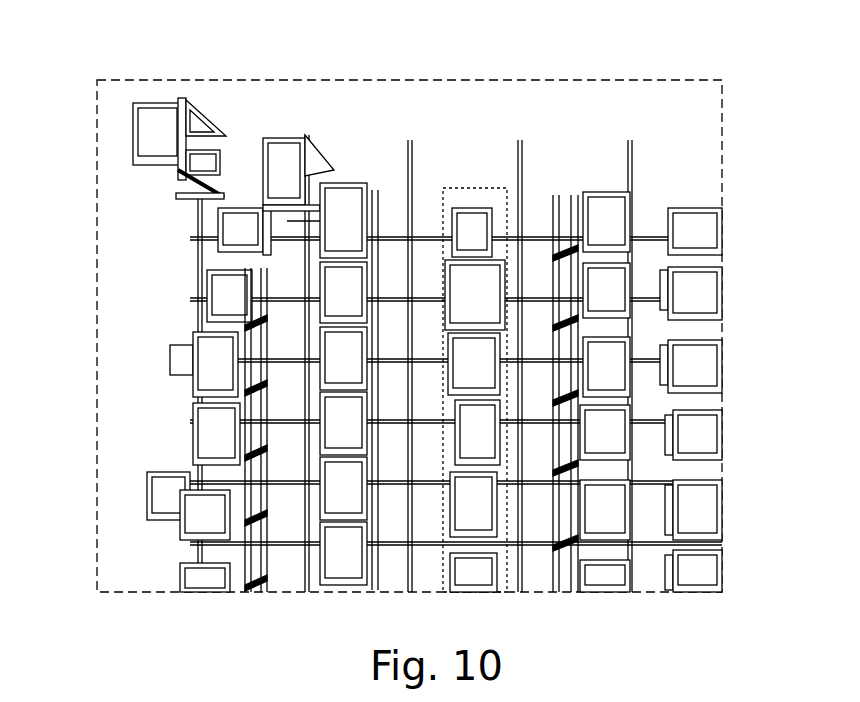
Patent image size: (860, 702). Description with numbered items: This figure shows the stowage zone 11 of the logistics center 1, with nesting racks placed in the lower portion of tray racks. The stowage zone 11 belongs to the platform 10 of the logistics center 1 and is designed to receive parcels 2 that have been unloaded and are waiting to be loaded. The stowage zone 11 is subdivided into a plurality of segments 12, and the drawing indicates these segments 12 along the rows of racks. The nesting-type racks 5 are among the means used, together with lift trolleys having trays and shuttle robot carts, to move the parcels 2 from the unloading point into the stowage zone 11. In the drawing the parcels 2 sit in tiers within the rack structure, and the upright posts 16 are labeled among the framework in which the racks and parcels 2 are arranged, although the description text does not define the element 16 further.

The logistics center 1 is at (110, 76).
The parcels 2 is at (605, 375).
The nesting-type racks 5 is at (205, 123).
The platform 10 is at (120, 405).
The stowage zone 11 is at (658, 154).
The segments 12 is at (456, 186).
The post 16 is at (300, 557).